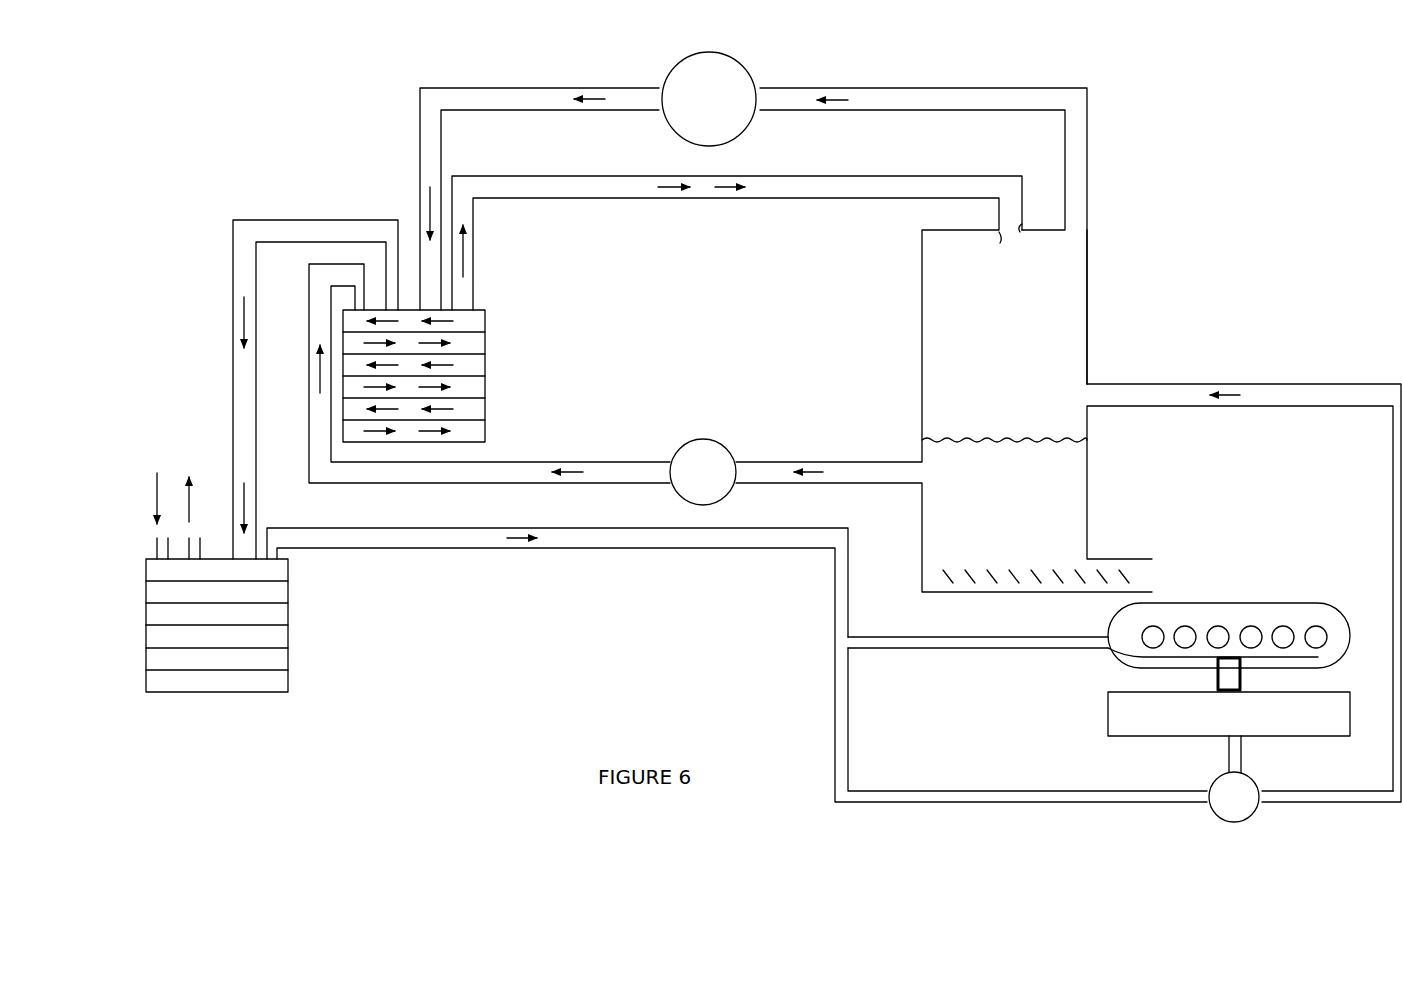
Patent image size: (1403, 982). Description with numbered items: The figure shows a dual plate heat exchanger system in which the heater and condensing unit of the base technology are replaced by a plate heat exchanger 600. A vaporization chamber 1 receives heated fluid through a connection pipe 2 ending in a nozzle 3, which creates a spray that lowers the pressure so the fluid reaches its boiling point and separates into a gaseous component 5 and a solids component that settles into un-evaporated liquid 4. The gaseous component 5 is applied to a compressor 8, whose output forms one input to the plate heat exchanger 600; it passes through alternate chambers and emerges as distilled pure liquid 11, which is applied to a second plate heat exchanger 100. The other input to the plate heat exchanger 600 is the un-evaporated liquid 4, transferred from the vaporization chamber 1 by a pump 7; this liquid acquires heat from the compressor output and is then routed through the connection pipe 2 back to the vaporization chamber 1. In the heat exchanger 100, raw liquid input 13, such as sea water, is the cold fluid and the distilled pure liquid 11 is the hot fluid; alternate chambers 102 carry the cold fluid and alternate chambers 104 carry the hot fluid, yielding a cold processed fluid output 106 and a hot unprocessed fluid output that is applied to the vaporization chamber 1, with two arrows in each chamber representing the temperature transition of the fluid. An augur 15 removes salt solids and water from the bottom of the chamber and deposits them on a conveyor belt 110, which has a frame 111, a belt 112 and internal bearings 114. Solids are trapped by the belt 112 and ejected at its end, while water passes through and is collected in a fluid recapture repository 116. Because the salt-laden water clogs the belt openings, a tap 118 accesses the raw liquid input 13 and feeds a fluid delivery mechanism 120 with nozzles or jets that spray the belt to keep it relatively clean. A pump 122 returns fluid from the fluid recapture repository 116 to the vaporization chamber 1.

The vaporization chamber 1 is at (1087, 275).
The connection pipe 2 is at (950, 178).
The nozzle 3 is at (1003, 236).
The un-evaporated liquid 4 is at (1087, 470).
The gaseous component 5 is at (833, 100).
The pump 7 is at (703, 440).
The compressor 8 is at (742, 70).
The distilled pure liquid 11 is at (257, 483).
The raw liquid input 13 is at (1228, 395).
The augur 15 is at (1025, 580).
The heat exchanger 100 is at (220, 631).
The alternate chambers 102 is at (486, 410).
The alternate chambers 104 is at (486, 343).
The cold processed fluid output 106 is at (190, 494).
The conveyor belt 110 is at (1229, 630).
The frame 111 is at (1215, 682).
The belt 112 is at (1240, 603).
The internal bearings 114 is at (1153, 646).
The fluid recapture repository 116 is at (1105, 696).
The tap 118 is at (970, 650).
The fluid delivery mechanism 120 is at (1258, 660).
The pump 122 is at (1238, 822).
The plate heat exchanger 600 is at (489, 376).